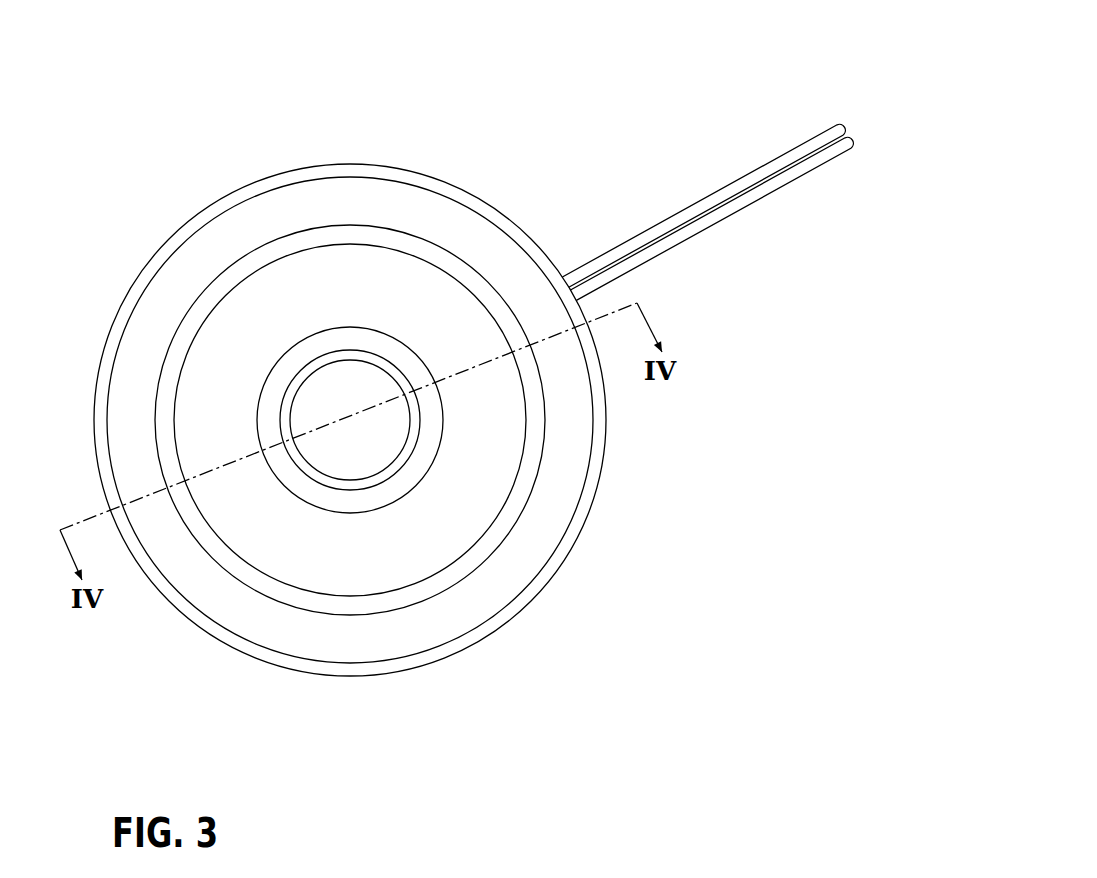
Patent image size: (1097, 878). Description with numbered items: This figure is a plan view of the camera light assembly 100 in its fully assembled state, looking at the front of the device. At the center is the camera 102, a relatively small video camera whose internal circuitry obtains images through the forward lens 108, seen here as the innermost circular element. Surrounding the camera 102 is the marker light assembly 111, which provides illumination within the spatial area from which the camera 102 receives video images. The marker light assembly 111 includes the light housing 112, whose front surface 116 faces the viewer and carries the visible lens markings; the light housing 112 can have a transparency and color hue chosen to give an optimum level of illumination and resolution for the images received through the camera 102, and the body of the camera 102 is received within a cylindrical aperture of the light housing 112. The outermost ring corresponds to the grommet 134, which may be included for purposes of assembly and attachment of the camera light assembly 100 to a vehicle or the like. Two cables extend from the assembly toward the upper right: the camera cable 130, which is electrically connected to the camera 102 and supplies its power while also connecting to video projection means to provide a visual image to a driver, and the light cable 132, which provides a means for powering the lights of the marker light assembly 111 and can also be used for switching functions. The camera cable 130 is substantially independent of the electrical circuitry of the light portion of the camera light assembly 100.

The camera light assembly 100 is at (580, 108).
The camera 102 is at (220, 427).
The forward lens 108 is at (367, 453).
The marker light assembly 111 is at (552, 462).
The light housing 112 is at (518, 542).
The front surface 116 is at (410, 295).
The camera cable 130 is at (698, 205).
The light cable 132 is at (743, 200).
The grommet 134 is at (377, 200).